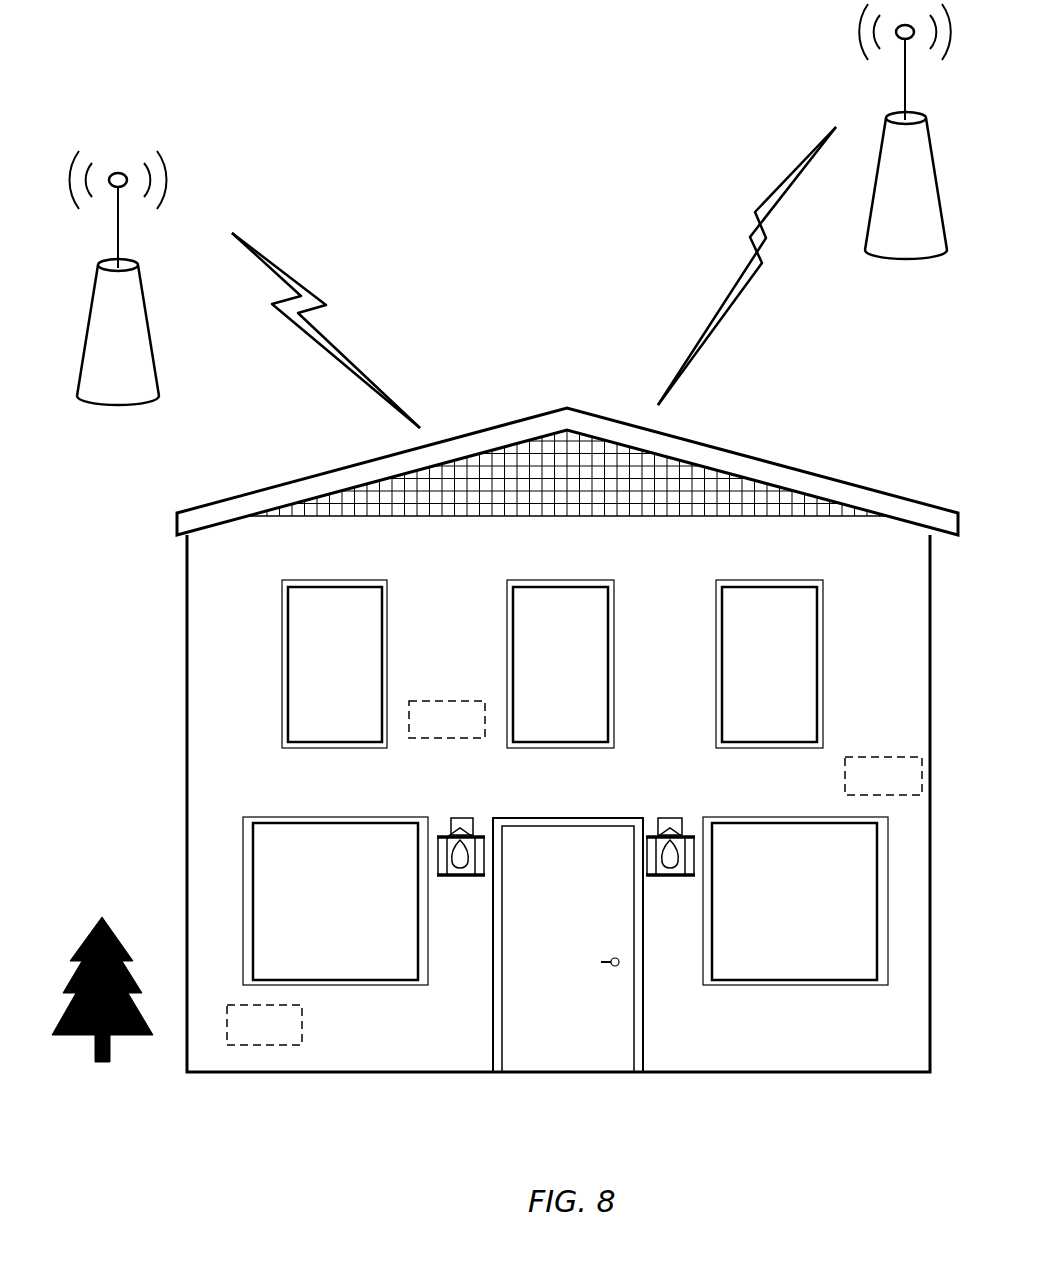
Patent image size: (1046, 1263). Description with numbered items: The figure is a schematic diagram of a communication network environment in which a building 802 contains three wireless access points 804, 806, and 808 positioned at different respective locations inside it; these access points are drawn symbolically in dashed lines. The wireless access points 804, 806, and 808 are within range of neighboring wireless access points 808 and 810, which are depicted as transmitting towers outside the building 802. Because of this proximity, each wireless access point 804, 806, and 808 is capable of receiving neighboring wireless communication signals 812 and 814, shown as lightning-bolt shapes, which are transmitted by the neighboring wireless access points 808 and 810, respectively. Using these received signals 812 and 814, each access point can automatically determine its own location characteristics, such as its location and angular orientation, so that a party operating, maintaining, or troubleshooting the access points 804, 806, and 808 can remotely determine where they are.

The building 802 is at (184, 668).
The wireless access point 804 is at (282, 1036).
The wireless access point 806 is at (465, 731).
The wireless access point 808 is at (923, 248).
The neighboring wireless access point 810 is at (136, 392).
The neighboring wireless communication signal 812 is at (867, 70).
The neighboring wireless communication signal 814 is at (175, 180).